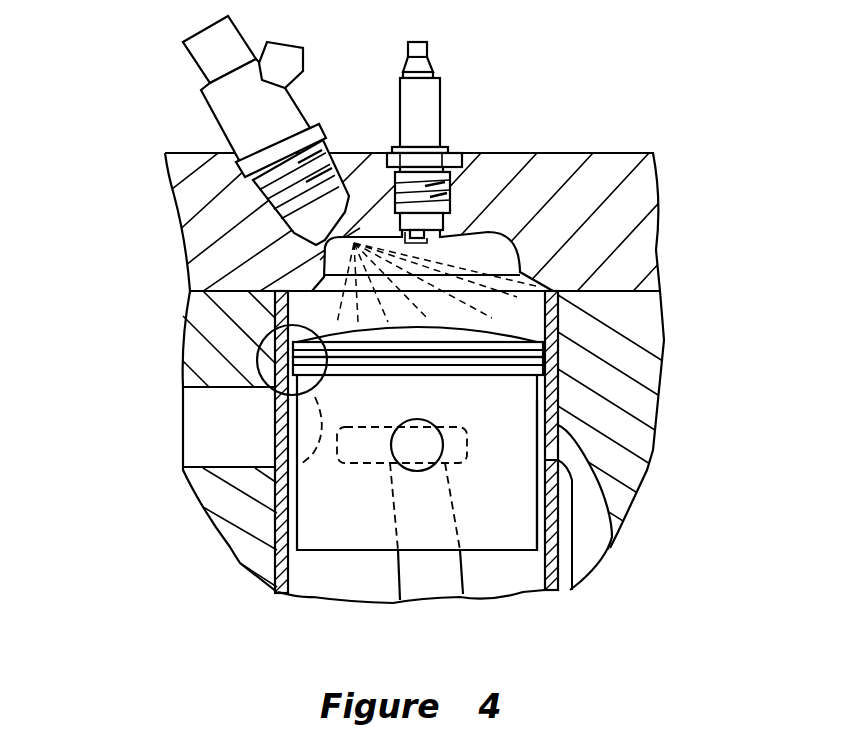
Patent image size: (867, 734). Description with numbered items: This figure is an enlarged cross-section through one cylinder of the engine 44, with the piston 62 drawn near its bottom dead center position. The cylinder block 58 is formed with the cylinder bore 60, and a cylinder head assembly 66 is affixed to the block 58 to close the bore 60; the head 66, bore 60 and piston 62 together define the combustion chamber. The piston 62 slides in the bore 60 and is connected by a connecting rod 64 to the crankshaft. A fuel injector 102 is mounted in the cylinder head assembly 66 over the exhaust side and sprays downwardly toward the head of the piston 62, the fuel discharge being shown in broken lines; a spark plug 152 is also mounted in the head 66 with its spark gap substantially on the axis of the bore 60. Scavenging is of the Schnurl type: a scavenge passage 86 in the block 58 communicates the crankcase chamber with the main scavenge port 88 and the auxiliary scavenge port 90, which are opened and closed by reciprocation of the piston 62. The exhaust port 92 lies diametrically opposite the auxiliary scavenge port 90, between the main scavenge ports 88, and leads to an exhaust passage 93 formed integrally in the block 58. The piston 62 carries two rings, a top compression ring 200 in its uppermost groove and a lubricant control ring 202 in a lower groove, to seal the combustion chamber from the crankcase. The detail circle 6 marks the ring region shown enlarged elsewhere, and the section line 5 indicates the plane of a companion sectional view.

The engine 44 is at (625, 137).
The cylinder head assembly 66 is at (660, 230).
The fuel injector 102 is at (306, 118).
The spark plug 152 is at (443, 117).
The cylinder bore 60 is at (535, 392).
The top compression ring 200 is at (460, 355).
The lubricant control ring 202 is at (433, 380).
The main scavenge port 88 is at (471, 427).
The auxiliary scavenge port 90 is at (533, 443).
The exhaust port 92 is at (303, 458).
The piston 62 is at (389, 526).
The connecting rod 64 is at (463, 575).
The exhaust passage 93 is at (227, 455).
The cylinder block 58 is at (647, 468).
The scavenge passage 86 is at (588, 555).
The detail circle of FIG. 6 is at (258, 347).
The section line of FIG. 5 is at (152, 440).